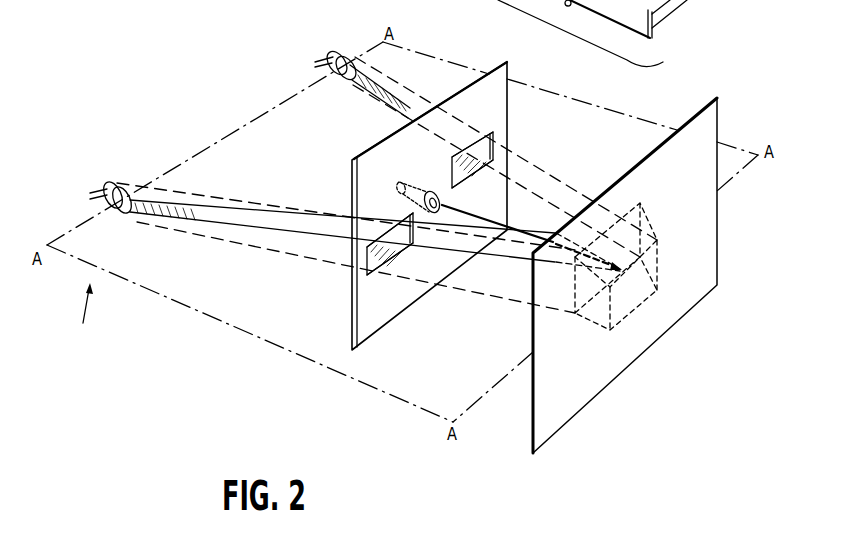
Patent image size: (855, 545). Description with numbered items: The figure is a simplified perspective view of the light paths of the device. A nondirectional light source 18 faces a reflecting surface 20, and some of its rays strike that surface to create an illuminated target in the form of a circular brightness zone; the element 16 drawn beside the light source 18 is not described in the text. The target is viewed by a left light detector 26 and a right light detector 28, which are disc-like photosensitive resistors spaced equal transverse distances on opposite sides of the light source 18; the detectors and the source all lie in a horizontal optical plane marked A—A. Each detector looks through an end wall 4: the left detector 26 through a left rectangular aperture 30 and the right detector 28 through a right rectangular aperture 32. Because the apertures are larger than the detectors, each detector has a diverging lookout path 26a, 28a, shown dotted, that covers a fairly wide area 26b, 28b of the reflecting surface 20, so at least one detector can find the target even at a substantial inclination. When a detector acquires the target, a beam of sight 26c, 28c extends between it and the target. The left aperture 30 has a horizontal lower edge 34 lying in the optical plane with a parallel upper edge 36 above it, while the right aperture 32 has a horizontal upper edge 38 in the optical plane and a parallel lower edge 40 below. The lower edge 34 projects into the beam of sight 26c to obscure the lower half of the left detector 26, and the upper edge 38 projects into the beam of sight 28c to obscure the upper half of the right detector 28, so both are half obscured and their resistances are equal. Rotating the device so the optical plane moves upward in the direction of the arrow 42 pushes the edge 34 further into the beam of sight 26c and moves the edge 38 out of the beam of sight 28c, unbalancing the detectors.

The end wall 4 is at (492, 72).
The lens 16 is at (430, 187).
The light source 18 is at (432, 213).
The reflecting surface 20 is at (680, 127).
The left light detector 26 is at (339, 53).
The lookout path of left detector 26a is at (583, 176).
The area covered by left lookout path 26b is at (635, 222).
The beam of sight of left detector 26c is at (390, 93).
The right light detector 28 is at (116, 186).
The lookout path of right detector 28a is at (487, 300).
The area covered by right lookout path 28b is at (648, 283).
The beam of sight of right detector 28c is at (222, 213).
The left rectangular aperture 30 is at (487, 143).
The right rectangular aperture 32 is at (385, 272).
The lower edge of left aperture 34 is at (490, 160).
The upper edge of left aperture 36 is at (482, 131).
The upper edge of right aperture 38 is at (398, 220).
The lower edge of right aperture 40 is at (397, 260).
The arrow 42 is at (80, 316).